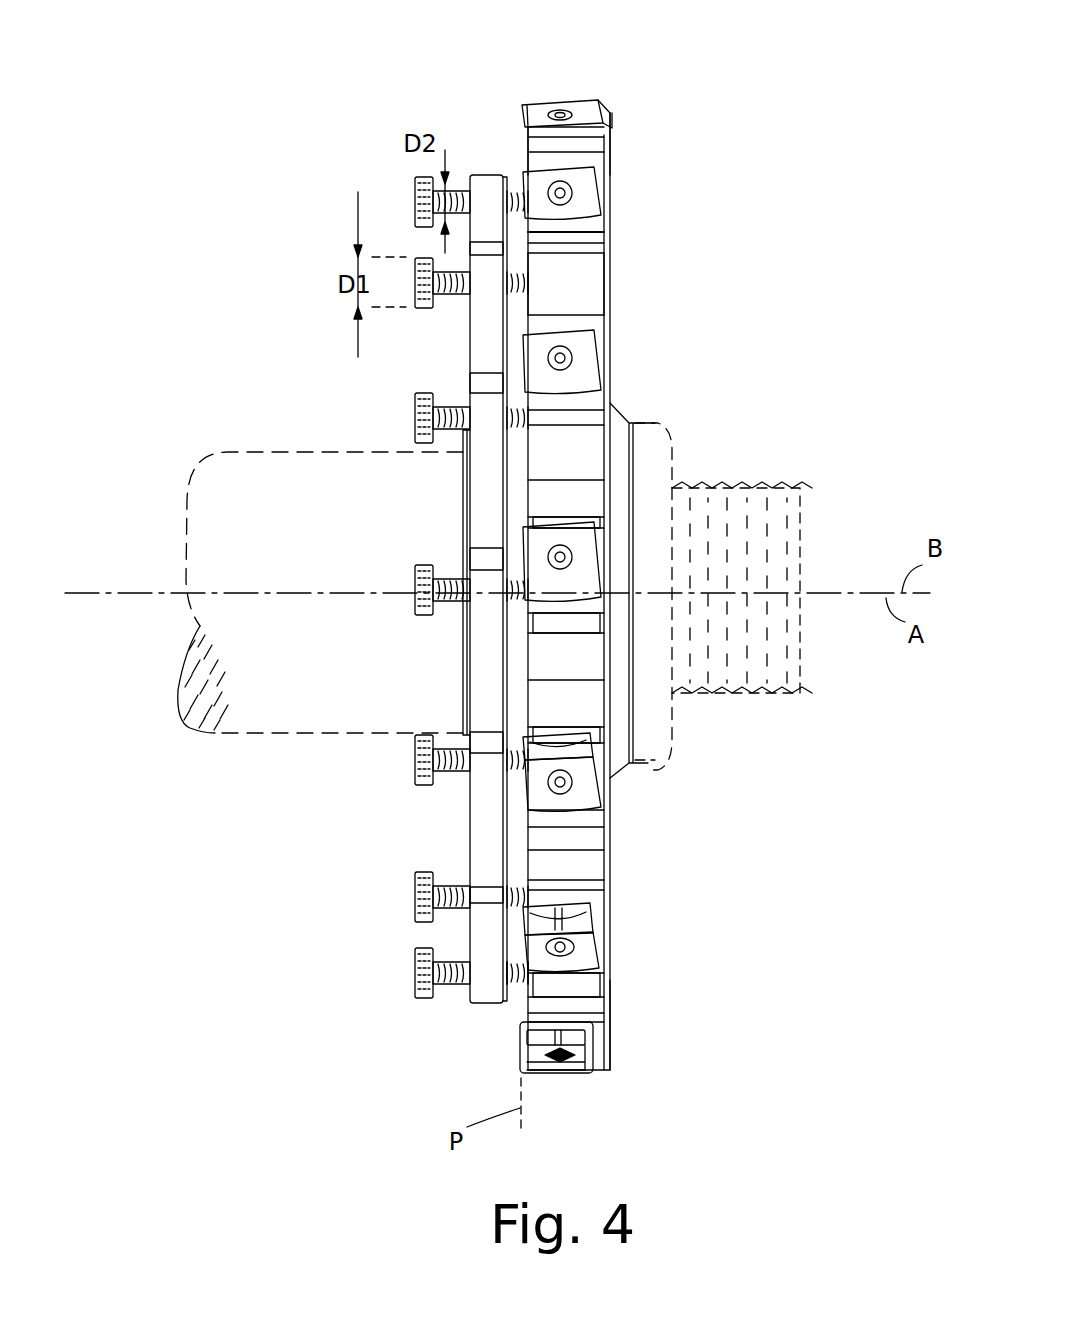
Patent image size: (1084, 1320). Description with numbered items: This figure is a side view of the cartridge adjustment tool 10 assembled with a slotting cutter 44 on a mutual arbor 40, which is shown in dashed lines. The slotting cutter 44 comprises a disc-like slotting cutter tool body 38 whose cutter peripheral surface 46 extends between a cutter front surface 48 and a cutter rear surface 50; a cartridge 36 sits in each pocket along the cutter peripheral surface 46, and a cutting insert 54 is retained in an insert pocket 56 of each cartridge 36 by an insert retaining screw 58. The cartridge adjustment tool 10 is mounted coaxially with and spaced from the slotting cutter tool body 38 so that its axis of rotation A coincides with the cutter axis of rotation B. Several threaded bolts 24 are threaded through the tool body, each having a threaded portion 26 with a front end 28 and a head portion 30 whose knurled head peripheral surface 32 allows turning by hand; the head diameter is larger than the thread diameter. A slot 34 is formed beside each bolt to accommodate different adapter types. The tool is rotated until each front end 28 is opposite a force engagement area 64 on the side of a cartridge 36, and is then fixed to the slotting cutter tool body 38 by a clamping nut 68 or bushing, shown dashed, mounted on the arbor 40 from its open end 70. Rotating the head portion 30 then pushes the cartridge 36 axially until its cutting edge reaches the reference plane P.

The cartridge adjustment tool 10 is at (461, 541).
The threaded bolt 24 is at (418, 587).
The threaded portion 26 is at (455, 775).
The front end 28 is at (530, 282).
The head portion 30 is at (404, 756).
The head peripheral surface 32 is at (423, 790).
The slot 34 is at (480, 383).
The cartridge 36 is at (586, 818).
The slotting cutter tool body 38 is at (596, 262).
The mutual arbor 40 is at (256, 724).
The slotting cutter 44 is at (521, 90).
The cutter peripheral surface 46 is at (594, 90).
The cutter front surface 48 is at (514, 1042).
The cutter rear surface 50 is at (626, 1038).
The cutting insert 54 is at (592, 188).
The insert pocket 56 is at (606, 114).
The insert retaining screw 58 is at (560, 108).
The force engagement area 64 is at (517, 988).
The clamping nut 68 is at (662, 418).
The open end 70 is at (810, 498).